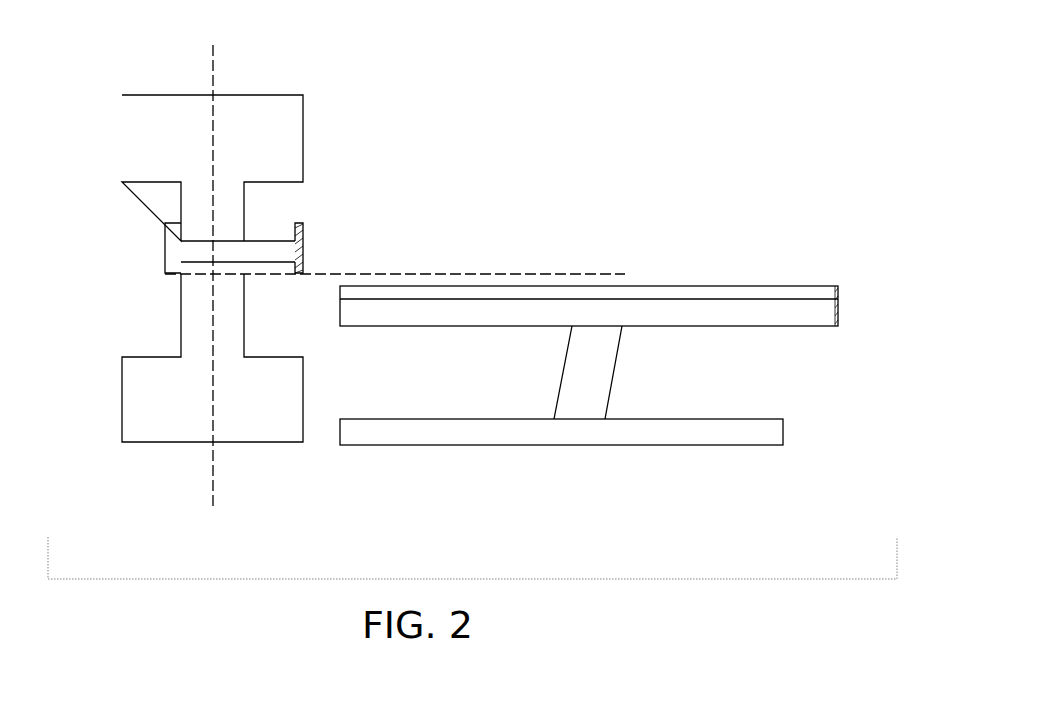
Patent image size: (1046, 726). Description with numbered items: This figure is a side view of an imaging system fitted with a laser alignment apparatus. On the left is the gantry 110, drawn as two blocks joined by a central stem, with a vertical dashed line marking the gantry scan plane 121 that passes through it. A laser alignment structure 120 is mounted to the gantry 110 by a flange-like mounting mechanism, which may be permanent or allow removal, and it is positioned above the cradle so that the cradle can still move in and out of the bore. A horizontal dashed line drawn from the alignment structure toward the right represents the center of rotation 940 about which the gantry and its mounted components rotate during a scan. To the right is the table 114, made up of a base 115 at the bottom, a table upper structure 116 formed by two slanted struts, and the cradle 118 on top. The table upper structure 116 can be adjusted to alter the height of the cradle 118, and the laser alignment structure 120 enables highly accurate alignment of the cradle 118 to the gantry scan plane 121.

The gantry 110 is at (154, 94).
The laser alignment structure 120 is at (163, 253).
The gantry scan plane 121 is at (208, 489).
The center of rotation 940 is at (533, 272).
The table 114 is at (589, 383).
The cradle 118 is at (716, 285).
The table upper structure 116 is at (755, 327).
The base 115 is at (724, 446).